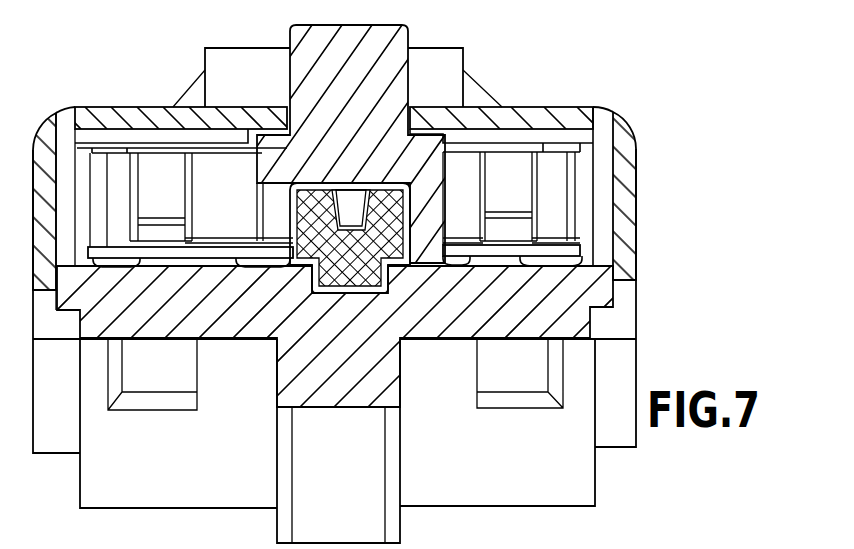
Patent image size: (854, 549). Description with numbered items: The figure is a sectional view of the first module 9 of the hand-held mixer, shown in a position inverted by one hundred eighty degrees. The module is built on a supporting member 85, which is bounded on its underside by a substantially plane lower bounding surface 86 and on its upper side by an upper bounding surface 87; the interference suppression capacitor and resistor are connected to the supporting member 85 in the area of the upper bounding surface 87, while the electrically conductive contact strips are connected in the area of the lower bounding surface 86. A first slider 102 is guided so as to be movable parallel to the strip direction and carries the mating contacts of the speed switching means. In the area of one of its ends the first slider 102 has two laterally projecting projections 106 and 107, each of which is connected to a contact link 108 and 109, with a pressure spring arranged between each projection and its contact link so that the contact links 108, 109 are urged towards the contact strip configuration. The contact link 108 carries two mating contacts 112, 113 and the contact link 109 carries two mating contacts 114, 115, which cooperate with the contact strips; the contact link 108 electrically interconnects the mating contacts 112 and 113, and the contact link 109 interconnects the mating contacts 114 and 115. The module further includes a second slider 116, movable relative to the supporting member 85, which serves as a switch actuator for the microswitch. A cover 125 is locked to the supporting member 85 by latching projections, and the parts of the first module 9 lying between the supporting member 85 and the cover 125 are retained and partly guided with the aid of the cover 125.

The first module 9 is at (670, 115).
The supporting member 85 is at (423, 318).
The lower bounding surface 86 is at (583, 260).
The upper bounding surface 87 is at (207, 342).
The first slider 102 is at (385, 70).
The projection 106 is at (155, 183).
The projection 107 is at (500, 173).
The contact link 108 is at (163, 248).
The contact link 109 is at (513, 247).
The mating contact 112 is at (113, 266).
The mating contact 113 is at (258, 264).
The mating contact 114 is at (445, 262).
The mating contact 115 is at (560, 285).
The second slider 116 is at (340, 280).
The cover 125 is at (627, 167).